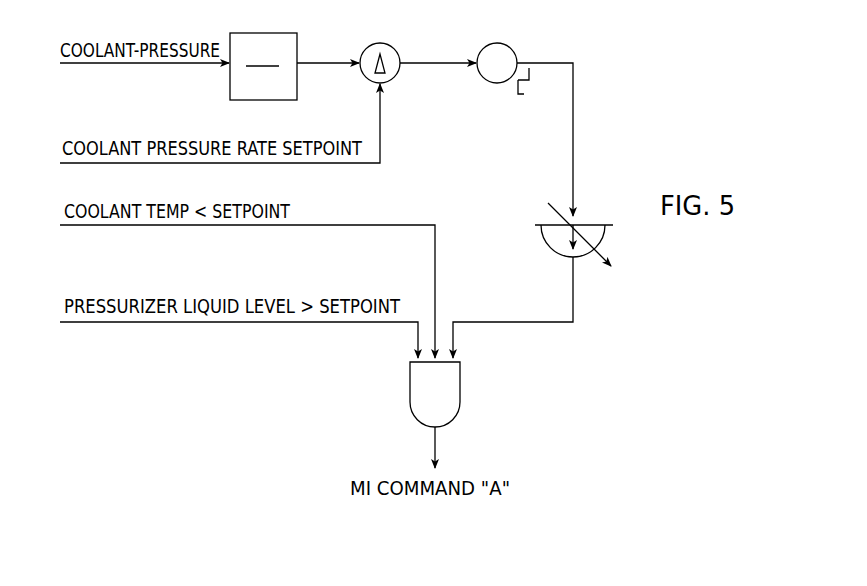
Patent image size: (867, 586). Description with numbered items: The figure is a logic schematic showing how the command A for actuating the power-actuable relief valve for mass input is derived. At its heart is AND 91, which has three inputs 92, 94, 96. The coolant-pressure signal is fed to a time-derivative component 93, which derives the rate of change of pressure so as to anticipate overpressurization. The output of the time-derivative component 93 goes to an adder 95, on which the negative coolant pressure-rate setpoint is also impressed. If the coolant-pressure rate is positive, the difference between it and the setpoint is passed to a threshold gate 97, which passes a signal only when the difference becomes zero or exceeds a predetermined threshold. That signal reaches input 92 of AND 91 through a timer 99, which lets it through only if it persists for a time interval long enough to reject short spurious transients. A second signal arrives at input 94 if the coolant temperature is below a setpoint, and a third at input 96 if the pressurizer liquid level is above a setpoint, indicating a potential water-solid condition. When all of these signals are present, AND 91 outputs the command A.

The AND 91 is at (418, 392).
The input 92 is at (456, 354).
The time-derivative component 93 is at (297, 33).
The input 94 is at (440, 350).
The adder 95 is at (386, 45).
The input 96 is at (418, 354).
The threshold gate 97 is at (488, 44).
The timer 99 is at (548, 243).